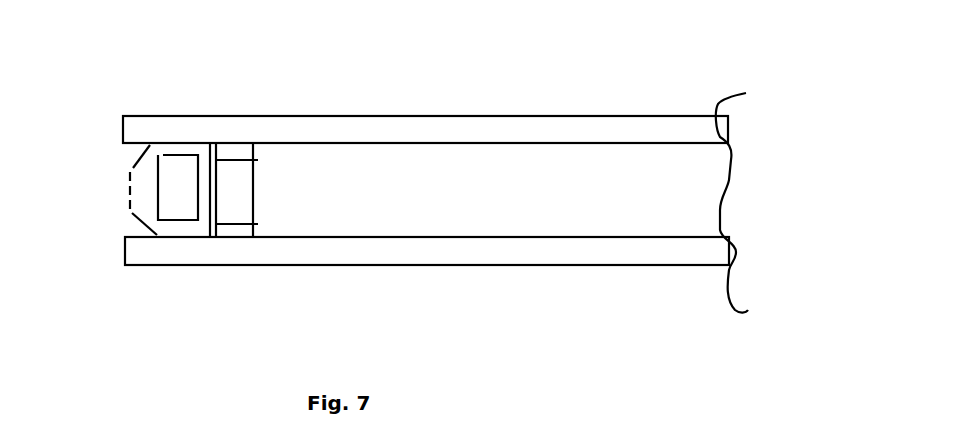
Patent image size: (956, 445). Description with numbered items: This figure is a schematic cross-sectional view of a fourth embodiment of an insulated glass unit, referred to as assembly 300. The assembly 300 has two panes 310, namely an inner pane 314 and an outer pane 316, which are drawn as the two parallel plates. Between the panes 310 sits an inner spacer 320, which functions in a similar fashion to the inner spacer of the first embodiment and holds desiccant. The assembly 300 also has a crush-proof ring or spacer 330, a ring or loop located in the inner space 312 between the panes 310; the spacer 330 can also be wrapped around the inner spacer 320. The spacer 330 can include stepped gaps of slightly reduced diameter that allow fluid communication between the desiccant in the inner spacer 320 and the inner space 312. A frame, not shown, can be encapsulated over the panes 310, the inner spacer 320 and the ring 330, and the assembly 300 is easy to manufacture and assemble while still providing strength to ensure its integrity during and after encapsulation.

The assembly 300 is at (142, 87).
The panes 310 is at (727, 115).
The inner space 312 is at (683, 177).
The inner pane 314 is at (590, 130).
The outer pane 316 is at (613, 255).
The inner spacer 320 is at (140, 228).
The crush-proof ring or spacer 330 is at (349, 226).